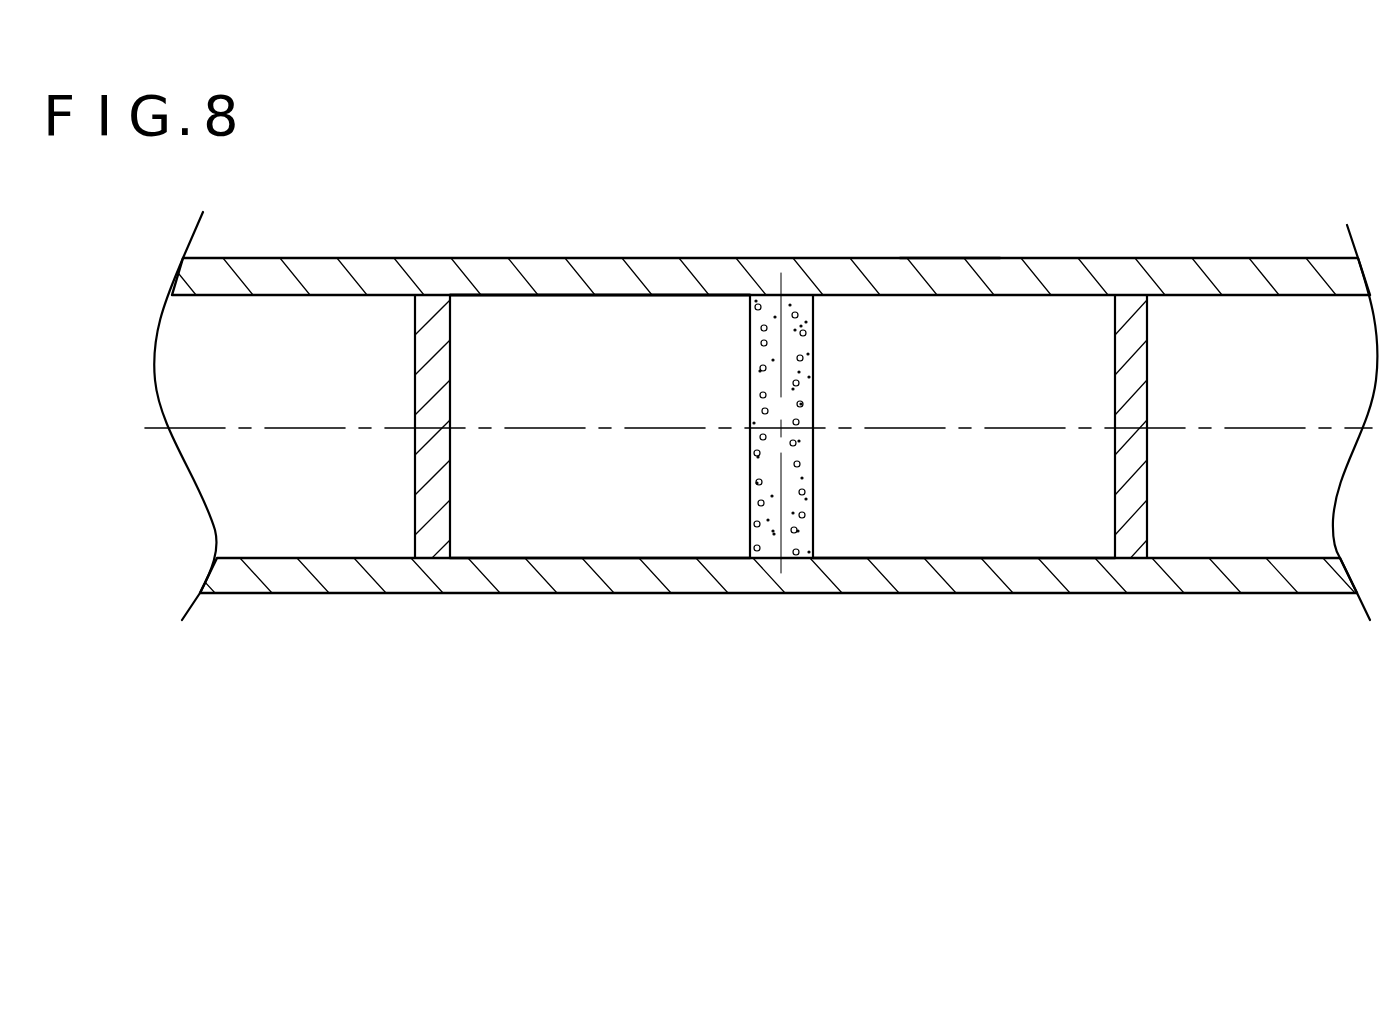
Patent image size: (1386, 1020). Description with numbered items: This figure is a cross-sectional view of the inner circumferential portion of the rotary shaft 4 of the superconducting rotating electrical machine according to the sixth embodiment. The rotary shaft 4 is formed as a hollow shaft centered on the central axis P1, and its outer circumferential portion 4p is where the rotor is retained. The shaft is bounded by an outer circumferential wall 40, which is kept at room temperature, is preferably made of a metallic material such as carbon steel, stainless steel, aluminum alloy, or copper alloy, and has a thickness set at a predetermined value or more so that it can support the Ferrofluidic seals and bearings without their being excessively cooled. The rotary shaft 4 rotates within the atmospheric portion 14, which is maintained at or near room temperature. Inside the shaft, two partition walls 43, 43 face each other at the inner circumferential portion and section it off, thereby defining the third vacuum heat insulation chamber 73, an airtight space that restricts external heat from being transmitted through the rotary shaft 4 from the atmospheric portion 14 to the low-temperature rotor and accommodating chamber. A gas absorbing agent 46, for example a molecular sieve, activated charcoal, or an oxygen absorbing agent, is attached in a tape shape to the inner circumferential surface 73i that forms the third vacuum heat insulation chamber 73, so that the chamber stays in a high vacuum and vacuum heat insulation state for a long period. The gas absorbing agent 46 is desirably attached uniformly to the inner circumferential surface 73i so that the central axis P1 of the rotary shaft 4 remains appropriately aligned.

The atmospheric portion 14 is at (1378, 111).
The rotary shaft 4 is at (776, 371).
The outer circumferential portion of the rotary shaft 4p is at (932, 255).
The outer circumferential wall 40 is at (1273, 273).
The partition wall 43 is at (423, 502).
The gas absorbing agent 46 is at (802, 487).
The third vacuum heat insulation chamber 73 is at (580, 495).
The inner circumferential surface 73i is at (568, 297).
The central axis P1 is at (923, 427).